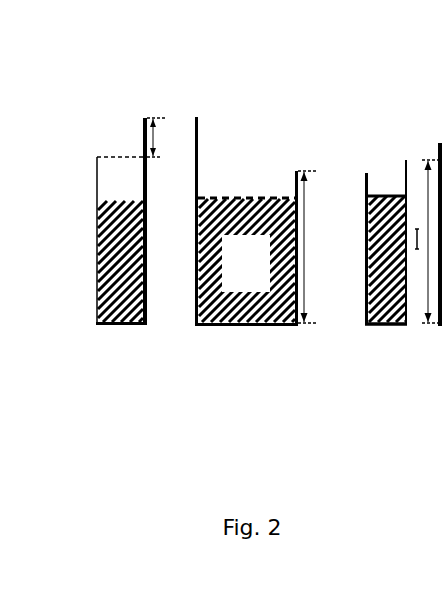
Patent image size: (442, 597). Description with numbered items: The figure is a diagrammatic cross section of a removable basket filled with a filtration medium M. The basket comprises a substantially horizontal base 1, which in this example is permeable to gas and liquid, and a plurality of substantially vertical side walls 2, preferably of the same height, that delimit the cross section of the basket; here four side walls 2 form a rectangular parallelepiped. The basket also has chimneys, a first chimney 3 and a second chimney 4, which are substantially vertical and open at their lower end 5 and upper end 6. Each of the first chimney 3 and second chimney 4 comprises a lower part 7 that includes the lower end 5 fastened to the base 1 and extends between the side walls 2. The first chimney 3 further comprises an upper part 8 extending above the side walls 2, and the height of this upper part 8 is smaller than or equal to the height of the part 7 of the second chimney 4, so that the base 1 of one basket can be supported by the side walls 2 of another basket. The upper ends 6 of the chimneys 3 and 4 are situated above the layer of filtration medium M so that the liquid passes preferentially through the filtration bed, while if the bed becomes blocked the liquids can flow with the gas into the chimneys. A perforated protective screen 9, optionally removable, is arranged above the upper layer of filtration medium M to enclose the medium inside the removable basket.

The base 1 is at (252, 330).
The side wall 2 is at (88, 293).
The first chimney 3 is at (200, 112).
The second chimney 4 is at (368, 160).
The lower end 5 is at (200, 330).
The upper end 6 is at (177, 118).
The lower part 7 is at (191, 294).
The upper part 8 is at (139, 130).
The perforated protective screen 9 is at (236, 195).